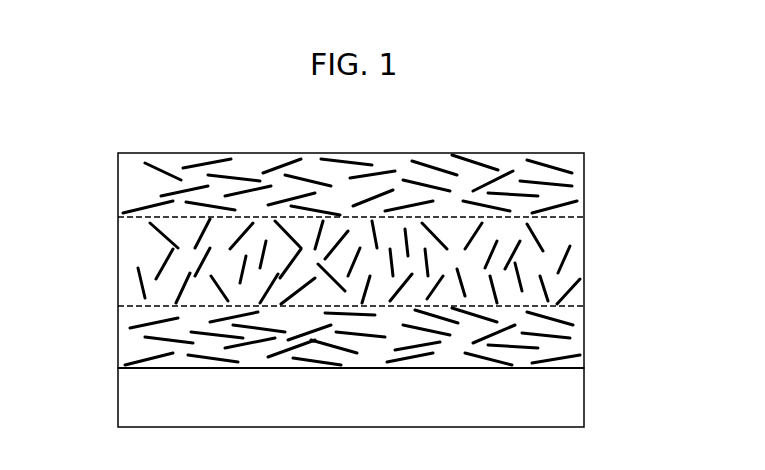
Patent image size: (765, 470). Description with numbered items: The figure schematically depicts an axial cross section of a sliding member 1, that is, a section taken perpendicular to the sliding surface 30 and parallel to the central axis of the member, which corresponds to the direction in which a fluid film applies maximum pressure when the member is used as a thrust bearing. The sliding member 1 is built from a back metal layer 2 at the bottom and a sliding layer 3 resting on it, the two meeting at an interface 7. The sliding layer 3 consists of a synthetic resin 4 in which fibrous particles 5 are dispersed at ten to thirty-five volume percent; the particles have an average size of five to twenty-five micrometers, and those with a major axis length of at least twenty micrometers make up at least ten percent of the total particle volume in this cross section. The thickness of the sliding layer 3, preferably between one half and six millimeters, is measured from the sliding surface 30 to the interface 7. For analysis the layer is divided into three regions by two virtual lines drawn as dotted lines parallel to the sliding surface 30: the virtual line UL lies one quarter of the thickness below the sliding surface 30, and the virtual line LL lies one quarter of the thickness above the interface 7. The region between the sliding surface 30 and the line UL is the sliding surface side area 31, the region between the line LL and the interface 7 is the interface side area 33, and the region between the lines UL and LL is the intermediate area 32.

The sliding member 1 is at (361, 264).
The back metal layer 2 is at (586, 394).
The sliding layer 3 is at (586, 263).
The synthetic resin 4 is at (248, 153).
The fibrous particles 5 is at (358, 153).
The interface 7 is at (568, 368).
The sliding surface 30 is at (350, 158).
The sliding surface side area 31 is at (320, 159).
The intermediate area 32 is at (112, 218).
The interface side area 33 is at (112, 307).
The virtual line UL is at (568, 217).
The virtual line LL is at (568, 307).